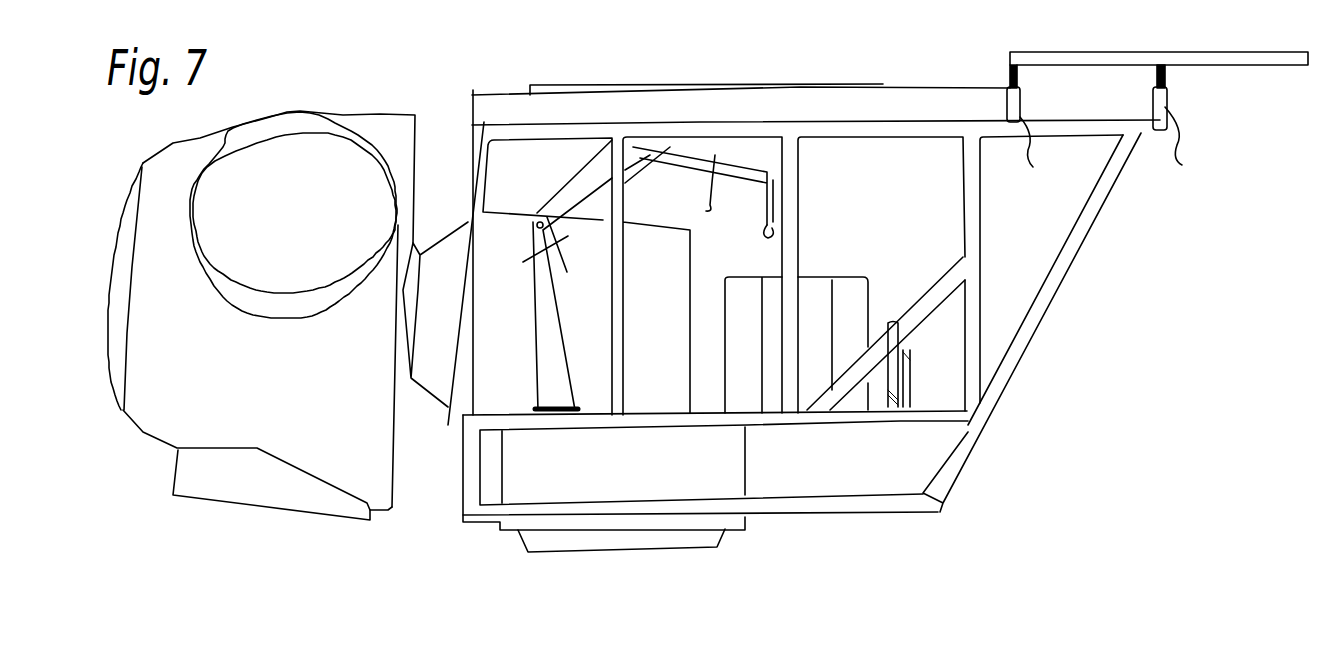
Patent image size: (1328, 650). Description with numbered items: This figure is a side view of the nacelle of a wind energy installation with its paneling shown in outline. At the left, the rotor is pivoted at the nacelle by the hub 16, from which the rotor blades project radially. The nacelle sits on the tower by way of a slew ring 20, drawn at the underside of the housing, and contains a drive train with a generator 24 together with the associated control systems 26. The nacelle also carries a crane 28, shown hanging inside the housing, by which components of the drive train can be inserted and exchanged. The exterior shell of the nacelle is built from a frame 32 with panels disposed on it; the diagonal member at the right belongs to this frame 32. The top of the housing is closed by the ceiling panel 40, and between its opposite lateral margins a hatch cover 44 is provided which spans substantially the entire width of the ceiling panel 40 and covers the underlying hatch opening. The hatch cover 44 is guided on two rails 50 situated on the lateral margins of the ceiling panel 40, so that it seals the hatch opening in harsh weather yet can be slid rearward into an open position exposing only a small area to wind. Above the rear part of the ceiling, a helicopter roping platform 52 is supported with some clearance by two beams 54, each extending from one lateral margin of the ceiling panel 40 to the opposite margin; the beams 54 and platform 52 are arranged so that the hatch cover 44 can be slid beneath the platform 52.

The hub 16 is at (118, 410).
The slew ring 20 is at (627, 540).
The generator 24 is at (483, 357).
The control systems 26 is at (842, 287).
The crane 28 is at (699, 198).
The frame 32 is at (1028, 330).
The ceiling panel 40 is at (954, 84).
The hatch cover 44 is at (838, 84).
The rails 50 is at (483, 107).
The platform 52 is at (1227, 65).
The beams 54 is at (1123, 148).